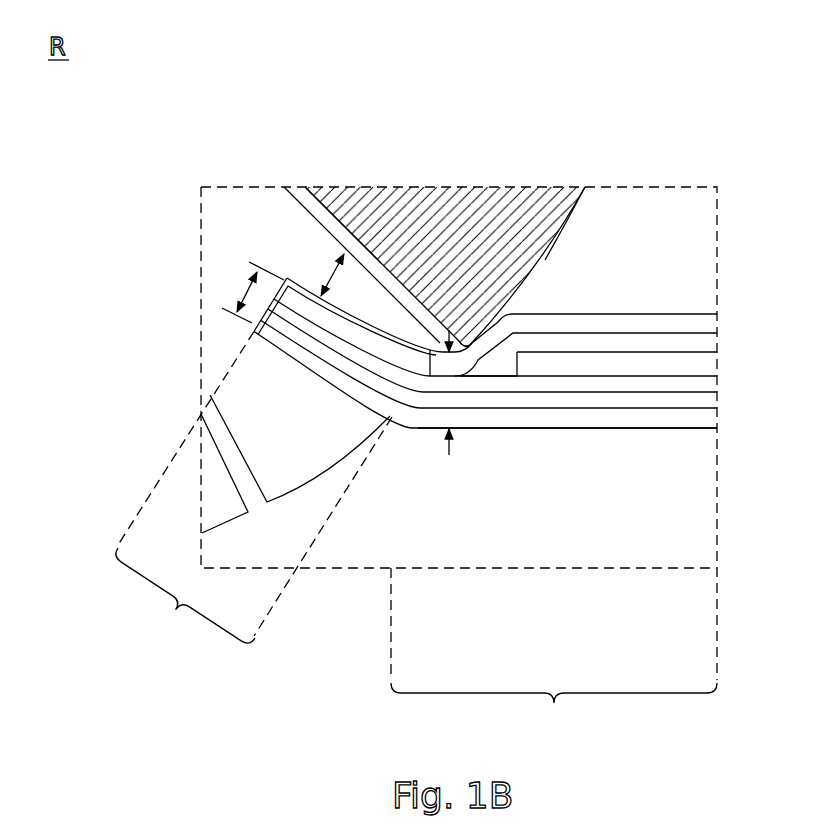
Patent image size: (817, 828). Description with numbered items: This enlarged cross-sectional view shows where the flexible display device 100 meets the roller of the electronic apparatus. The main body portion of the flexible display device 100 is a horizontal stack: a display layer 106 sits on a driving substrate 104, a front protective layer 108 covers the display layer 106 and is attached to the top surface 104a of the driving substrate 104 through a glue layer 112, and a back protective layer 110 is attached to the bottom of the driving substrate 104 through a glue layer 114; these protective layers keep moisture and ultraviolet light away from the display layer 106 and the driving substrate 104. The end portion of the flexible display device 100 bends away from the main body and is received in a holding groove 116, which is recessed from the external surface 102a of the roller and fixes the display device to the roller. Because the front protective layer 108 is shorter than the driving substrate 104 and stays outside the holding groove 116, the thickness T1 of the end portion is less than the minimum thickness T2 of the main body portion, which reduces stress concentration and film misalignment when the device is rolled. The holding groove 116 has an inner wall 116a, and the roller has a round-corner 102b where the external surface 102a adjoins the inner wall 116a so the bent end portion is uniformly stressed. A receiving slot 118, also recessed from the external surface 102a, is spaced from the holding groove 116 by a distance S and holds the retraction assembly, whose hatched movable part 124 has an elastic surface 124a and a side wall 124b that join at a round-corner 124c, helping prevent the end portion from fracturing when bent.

The flexible display device 100 is at (664, 434).
The external surface of the roller 102a is at (318, 470).
The round-corner 102b is at (432, 350).
The driving substrate 104 is at (717, 376).
The top surface of the driving substrate 104a is at (487, 376).
The display layer 106 is at (717, 352).
The front protective layer 108 is at (717, 314).
The back protective layer 110 is at (717, 408).
The glue layer 112 is at (717, 333).
The glue layer 114 is at (717, 392).
The holding groove 116 is at (289, 360).
The inner wall of the holding groove 116a is at (357, 317).
The receiving slot 118 is at (314, 229).
The movable part 124 is at (523, 213).
The elastic surface 124a is at (576, 203).
The side wall of the movable part 124b is at (362, 232).
The round-corner 124c is at (463, 333).
The distance S is at (330, 277).
The thickness of the end portion T1 is at (246, 291).
The minimum thickness of the main body portion T2 is at (450, 402).